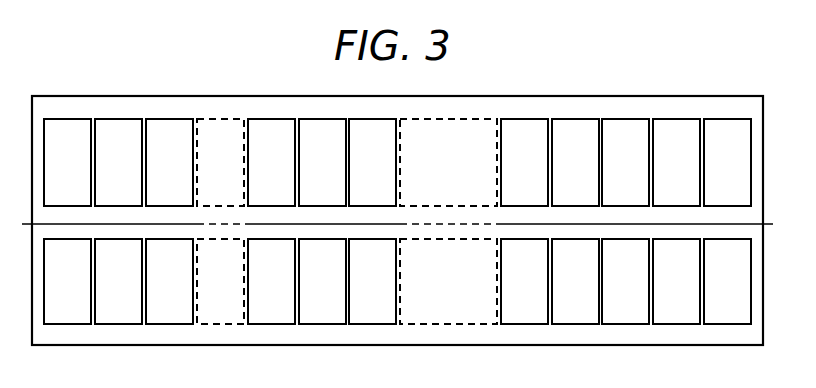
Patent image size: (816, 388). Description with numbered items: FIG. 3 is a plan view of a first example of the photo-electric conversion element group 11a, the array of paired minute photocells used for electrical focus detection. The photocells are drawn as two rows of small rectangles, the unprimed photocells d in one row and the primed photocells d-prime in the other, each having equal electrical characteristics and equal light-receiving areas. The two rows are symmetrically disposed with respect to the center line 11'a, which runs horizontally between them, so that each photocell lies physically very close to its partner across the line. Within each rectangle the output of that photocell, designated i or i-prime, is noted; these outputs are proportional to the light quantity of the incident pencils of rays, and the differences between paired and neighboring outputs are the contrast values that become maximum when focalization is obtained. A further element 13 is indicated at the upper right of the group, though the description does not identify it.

The photo-electric conversion element group 11a is at (568, 98).
The center line 11'a is at (397, 303).
The register cell 13 is at (622, 107).